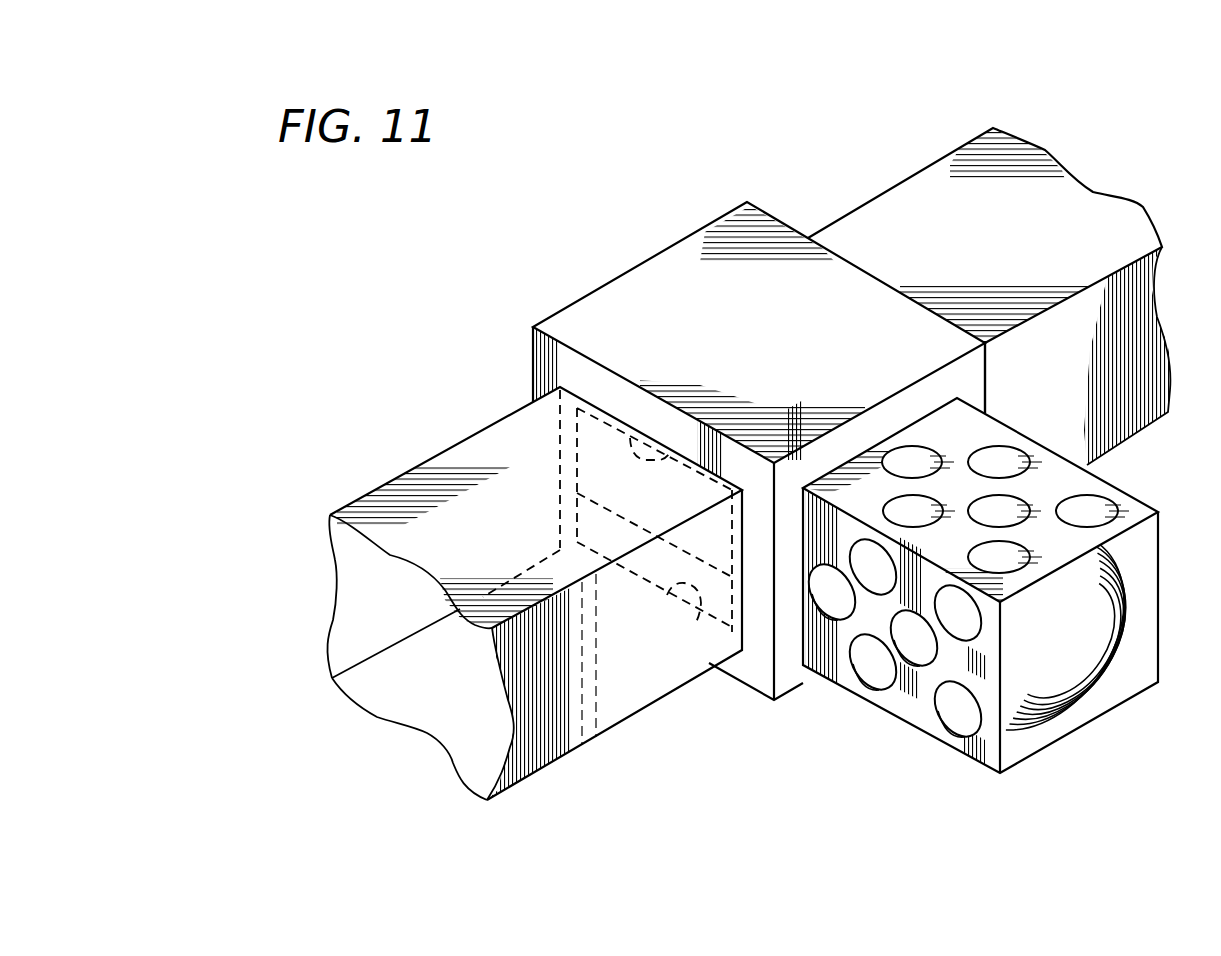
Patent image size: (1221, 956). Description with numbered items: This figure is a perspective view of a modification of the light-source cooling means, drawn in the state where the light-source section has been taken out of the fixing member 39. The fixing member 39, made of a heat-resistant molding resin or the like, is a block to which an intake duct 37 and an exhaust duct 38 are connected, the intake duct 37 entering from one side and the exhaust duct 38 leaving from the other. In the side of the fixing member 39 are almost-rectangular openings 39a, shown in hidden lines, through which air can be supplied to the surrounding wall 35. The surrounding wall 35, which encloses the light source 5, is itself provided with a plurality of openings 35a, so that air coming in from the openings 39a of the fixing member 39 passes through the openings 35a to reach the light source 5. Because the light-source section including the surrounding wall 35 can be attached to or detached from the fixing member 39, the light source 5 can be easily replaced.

The light source 5 is at (1075, 717).
The surrounding wall 35 is at (982, 752).
The openings 35a is at (917, 455).
The intake duct 37 is at (468, 453).
The exhaust duct 38 is at (933, 178).
The fixing member 39 is at (667, 263).
The openings 39a is at (675, 443).